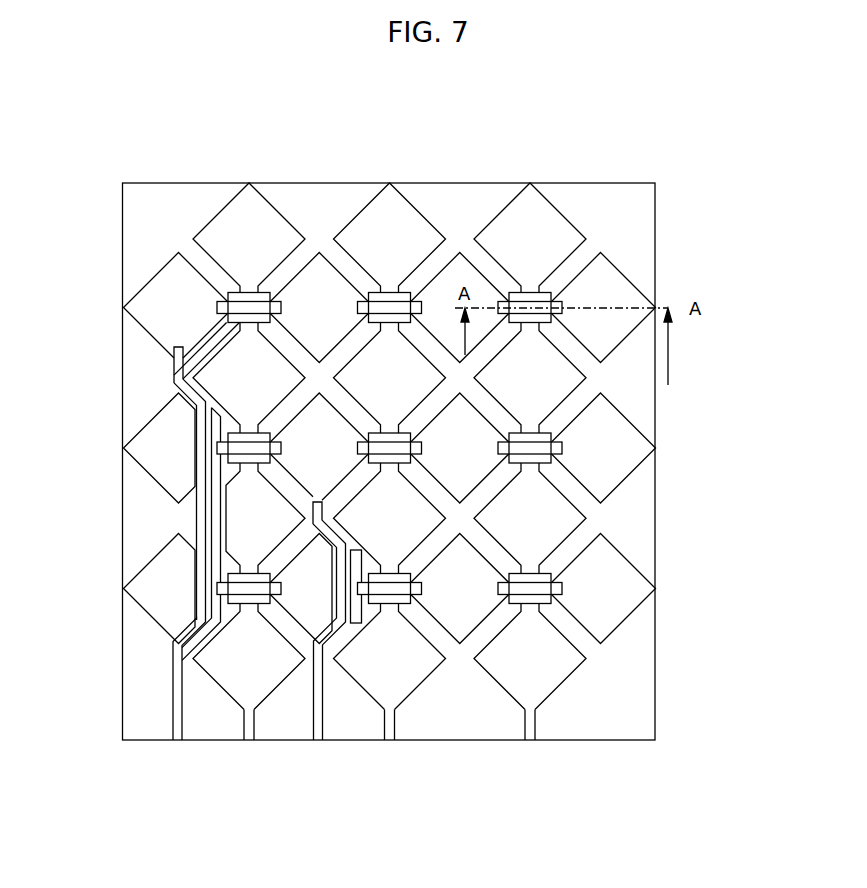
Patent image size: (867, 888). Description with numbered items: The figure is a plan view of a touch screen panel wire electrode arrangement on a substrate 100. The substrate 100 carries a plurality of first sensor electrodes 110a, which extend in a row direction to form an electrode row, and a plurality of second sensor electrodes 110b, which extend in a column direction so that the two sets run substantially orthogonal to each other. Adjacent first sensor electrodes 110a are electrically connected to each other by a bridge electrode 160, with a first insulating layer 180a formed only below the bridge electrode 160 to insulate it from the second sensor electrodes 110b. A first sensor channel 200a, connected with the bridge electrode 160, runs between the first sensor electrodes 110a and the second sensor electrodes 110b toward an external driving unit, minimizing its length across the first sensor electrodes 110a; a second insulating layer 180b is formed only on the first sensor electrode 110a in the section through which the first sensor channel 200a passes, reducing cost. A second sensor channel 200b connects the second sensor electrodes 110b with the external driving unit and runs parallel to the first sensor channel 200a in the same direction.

The substrate 100 is at (578, 183).
The first sensor electrode 110a is at (156, 282).
The second sensor electrode 110b is at (243, 212).
The bridge electrode 160 is at (257, 292).
The first insulating layer 180a is at (232, 328).
The second insulating layer 180b is at (192, 437).
The first sensor channel 200a is at (173, 700).
The second sensor channel 200b is at (242, 727).